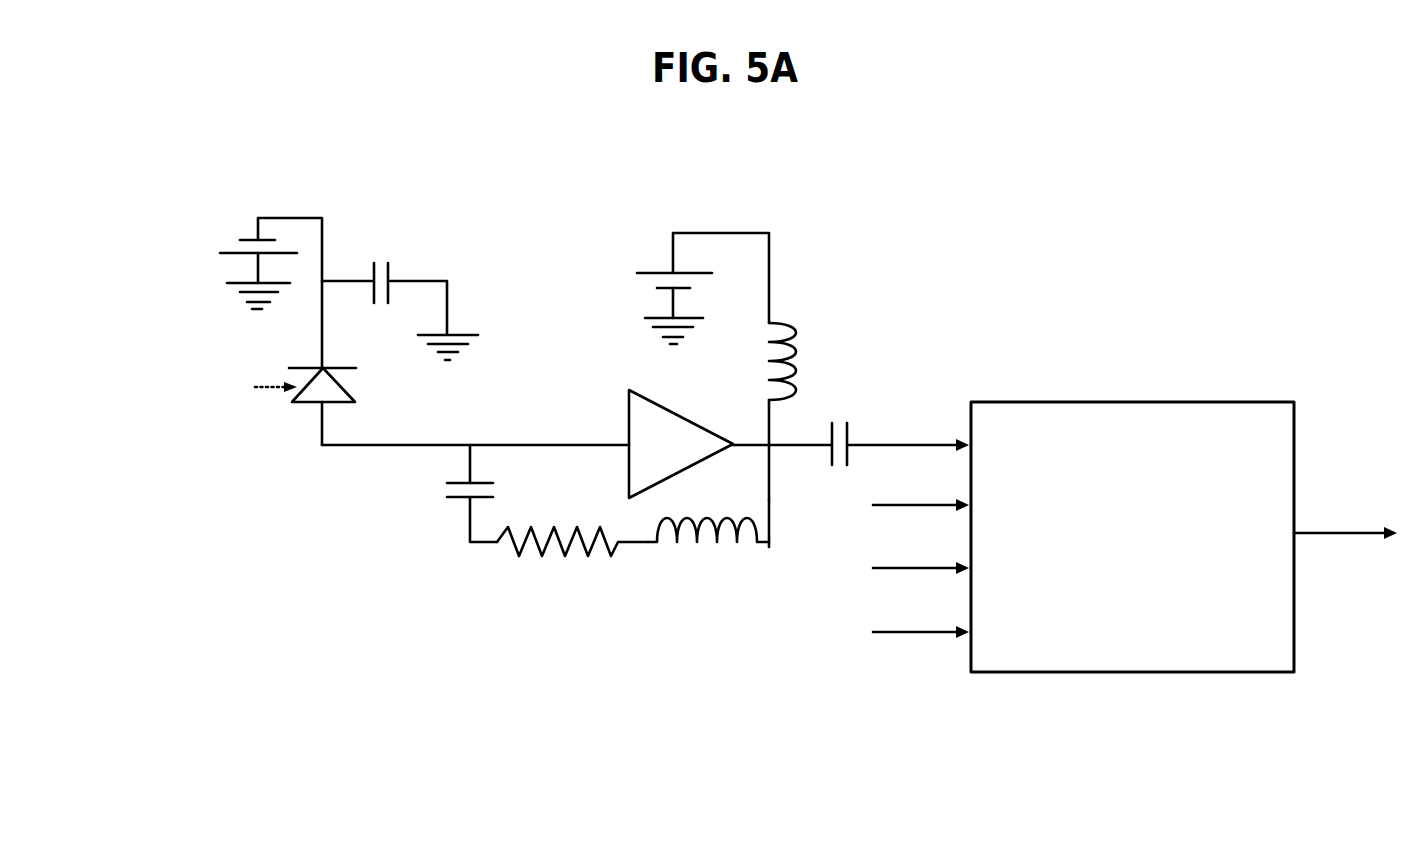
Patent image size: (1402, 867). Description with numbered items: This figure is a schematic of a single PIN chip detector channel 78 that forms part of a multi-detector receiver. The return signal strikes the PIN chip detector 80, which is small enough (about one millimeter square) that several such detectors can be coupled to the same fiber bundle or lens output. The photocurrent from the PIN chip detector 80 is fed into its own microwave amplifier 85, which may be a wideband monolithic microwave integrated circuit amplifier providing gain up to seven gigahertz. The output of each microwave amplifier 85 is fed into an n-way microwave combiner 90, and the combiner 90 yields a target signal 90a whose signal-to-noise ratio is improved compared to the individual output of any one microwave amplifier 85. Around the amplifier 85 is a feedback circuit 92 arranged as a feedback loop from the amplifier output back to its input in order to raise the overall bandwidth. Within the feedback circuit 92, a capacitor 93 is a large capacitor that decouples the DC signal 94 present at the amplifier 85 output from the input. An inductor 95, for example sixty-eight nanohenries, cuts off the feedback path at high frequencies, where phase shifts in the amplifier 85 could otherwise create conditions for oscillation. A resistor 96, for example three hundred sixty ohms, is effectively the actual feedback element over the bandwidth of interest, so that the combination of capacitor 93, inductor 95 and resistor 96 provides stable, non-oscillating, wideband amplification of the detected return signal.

The receiver channel circuit 78 is at (570, 367).
The PIN chip detector 80 is at (245, 417).
The microwave amplifier 85 is at (629, 410).
The n-way microwave combiner 90 is at (1110, 606).
The target signal 90a is at (1345, 510).
The feedback circuit 92 is at (786, 522).
The capacitor 93 is at (451, 508).
The DC signal 94 is at (752, 560).
The inductor 95 is at (691, 568).
The resistor 96 is at (551, 572).